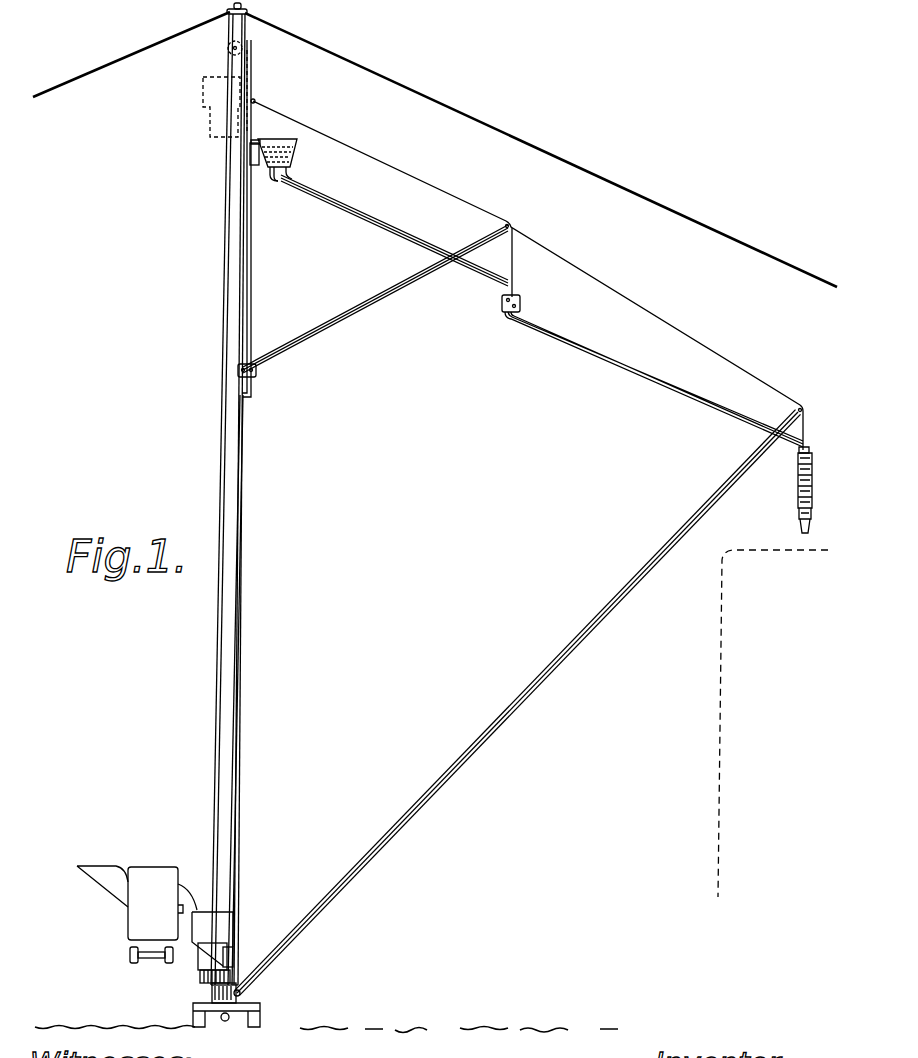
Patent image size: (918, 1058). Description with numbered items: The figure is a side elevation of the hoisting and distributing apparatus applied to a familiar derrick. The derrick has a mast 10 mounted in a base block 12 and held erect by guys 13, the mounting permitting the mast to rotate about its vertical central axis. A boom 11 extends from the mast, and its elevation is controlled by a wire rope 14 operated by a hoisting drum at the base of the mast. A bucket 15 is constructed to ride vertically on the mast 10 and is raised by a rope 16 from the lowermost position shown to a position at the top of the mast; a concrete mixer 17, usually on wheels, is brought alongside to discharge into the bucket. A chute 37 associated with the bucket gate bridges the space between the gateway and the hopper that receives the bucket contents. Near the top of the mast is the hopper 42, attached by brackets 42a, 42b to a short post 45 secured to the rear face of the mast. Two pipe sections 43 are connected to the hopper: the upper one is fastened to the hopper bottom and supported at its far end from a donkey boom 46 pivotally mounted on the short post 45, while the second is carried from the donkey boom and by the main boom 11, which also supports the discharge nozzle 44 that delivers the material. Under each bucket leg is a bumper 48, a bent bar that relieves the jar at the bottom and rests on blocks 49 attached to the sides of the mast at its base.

The mast 10 is at (225, 482).
The boom 11 is at (535, 677).
The base block 12 is at (258, 1007).
The guys 13 is at (183, 31).
The wire rope 14 is at (680, 325).
The bucket 15 is at (221, 923).
The rope 16 is at (240, 823).
The concrete mixer 17 is at (123, 922).
The chute 37 is at (232, 953).
The hopper 42 is at (304, 137).
The bracket 42a is at (263, 143).
The bracket 42b is at (258, 174).
The pipe section 43 is at (370, 222).
The discharge nozzle 44 is at (797, 494).
The short post 45 is at (251, 244).
The donkey boom 46 is at (366, 306).
The bumper 48 is at (198, 964).
The blocks 49 is at (207, 978).